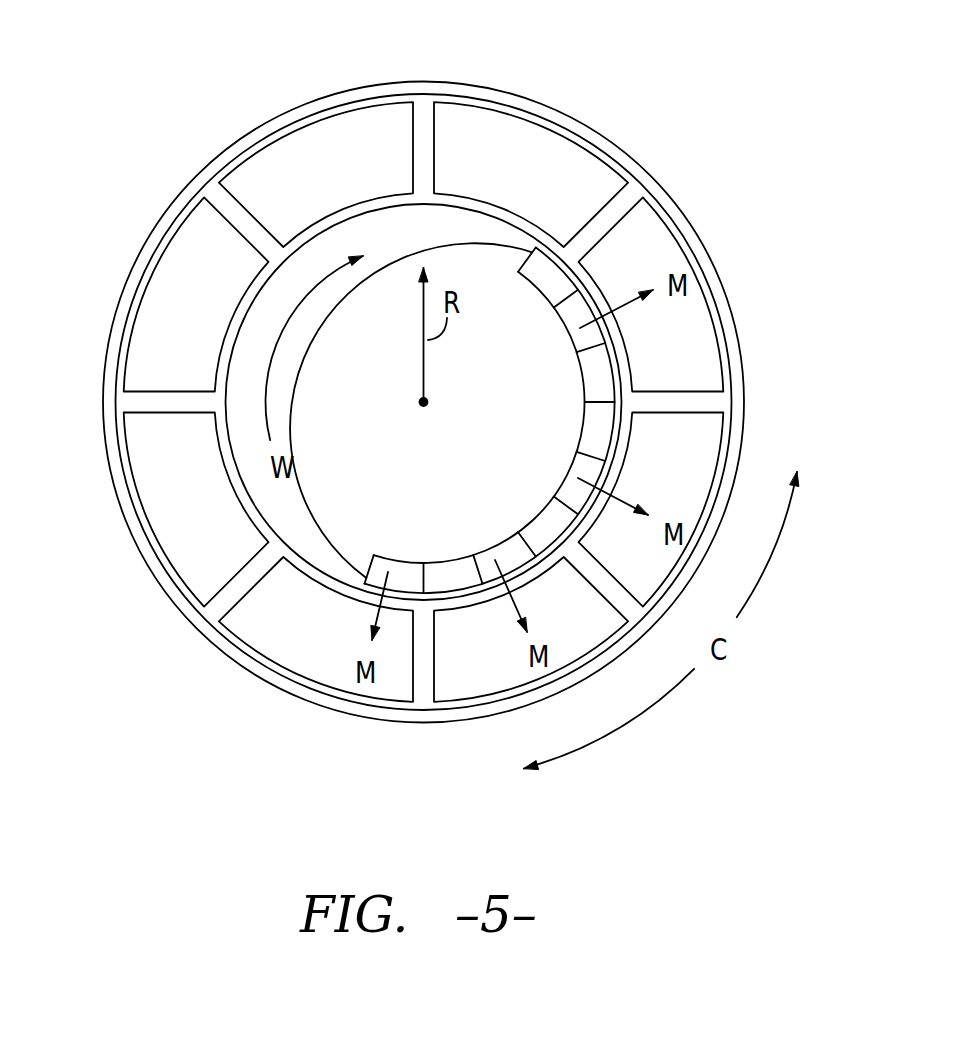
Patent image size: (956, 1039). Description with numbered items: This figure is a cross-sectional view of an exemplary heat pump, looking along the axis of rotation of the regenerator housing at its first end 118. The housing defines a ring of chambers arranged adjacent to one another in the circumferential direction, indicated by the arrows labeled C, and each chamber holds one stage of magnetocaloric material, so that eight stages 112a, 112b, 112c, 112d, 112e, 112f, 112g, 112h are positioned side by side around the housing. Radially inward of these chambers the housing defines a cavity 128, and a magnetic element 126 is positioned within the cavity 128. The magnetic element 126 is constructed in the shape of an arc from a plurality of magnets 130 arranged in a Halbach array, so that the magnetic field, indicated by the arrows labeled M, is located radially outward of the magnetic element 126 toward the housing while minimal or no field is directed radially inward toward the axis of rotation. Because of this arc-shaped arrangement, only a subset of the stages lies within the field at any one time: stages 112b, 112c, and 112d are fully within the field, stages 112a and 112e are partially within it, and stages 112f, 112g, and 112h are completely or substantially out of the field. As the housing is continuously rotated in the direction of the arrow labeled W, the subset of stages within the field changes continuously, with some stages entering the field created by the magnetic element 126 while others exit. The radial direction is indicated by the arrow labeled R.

The first end 118 is at (694, 135).
The stage 112a is at (500, 147).
The stage 112b is at (685, 325).
The stage 112c is at (690, 443).
The stage 112d is at (480, 670).
The stage 112e is at (287, 632).
The stage 112f is at (162, 468).
The stage 112g is at (190, 258).
The stage 112h is at (337, 147).
The magnetic element 126 is at (403, 572).
The cavity 128 is at (322, 507).
The magnets 130 is at (507, 317).